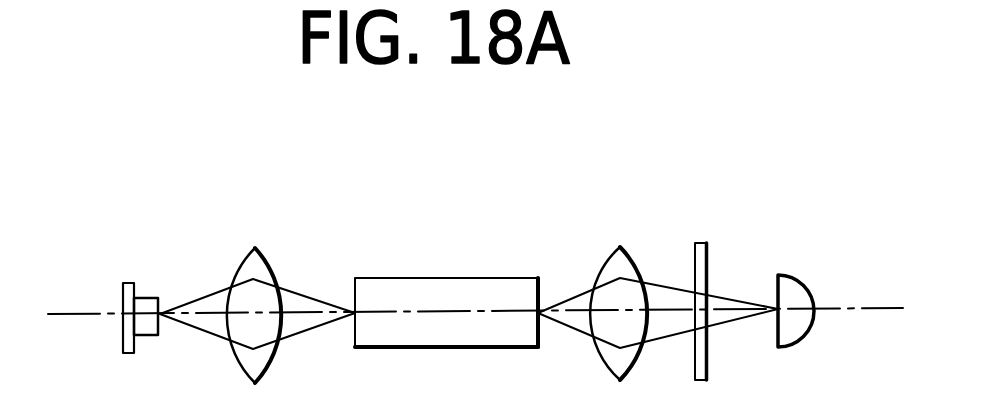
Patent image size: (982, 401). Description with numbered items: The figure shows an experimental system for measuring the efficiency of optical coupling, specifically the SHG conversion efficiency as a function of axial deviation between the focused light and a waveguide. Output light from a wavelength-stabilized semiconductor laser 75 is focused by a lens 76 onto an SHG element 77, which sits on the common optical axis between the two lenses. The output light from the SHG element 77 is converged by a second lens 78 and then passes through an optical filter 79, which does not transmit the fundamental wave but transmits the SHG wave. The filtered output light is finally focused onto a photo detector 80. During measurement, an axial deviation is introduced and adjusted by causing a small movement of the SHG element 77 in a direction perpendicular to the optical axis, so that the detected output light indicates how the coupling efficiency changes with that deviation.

The wavelength-stabilized semiconductor laser 75 is at (128, 292).
The lens 76 is at (257, 248).
The SHG element 77 is at (450, 278).
The lens 78 is at (622, 262).
The optical filter 79 is at (699, 241).
The photo detector 80 is at (793, 293).